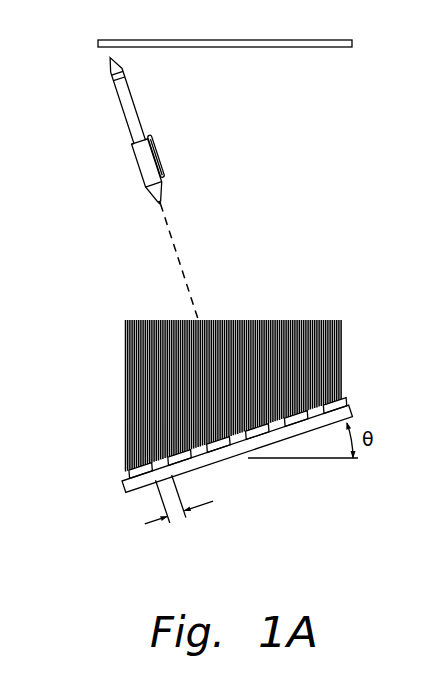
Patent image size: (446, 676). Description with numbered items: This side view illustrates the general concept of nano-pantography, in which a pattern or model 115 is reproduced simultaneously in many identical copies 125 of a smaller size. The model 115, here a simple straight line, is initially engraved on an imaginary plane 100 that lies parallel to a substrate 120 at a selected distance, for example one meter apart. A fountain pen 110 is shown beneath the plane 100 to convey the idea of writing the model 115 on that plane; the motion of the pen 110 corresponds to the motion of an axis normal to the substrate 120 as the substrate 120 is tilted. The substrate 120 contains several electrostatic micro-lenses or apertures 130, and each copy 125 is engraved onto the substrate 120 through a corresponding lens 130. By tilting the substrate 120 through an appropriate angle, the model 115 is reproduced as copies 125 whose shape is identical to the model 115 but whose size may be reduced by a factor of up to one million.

The imaginary plane 100 is at (134, 37).
The fountain pen 110 is at (135, 108).
The model 115 is at (270, 48).
The substrate 120 is at (122, 488).
The copies 125 is at (223, 483).
The electrostatic micro-lenses 130 is at (178, 514).